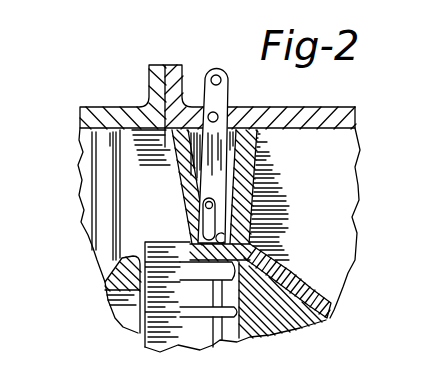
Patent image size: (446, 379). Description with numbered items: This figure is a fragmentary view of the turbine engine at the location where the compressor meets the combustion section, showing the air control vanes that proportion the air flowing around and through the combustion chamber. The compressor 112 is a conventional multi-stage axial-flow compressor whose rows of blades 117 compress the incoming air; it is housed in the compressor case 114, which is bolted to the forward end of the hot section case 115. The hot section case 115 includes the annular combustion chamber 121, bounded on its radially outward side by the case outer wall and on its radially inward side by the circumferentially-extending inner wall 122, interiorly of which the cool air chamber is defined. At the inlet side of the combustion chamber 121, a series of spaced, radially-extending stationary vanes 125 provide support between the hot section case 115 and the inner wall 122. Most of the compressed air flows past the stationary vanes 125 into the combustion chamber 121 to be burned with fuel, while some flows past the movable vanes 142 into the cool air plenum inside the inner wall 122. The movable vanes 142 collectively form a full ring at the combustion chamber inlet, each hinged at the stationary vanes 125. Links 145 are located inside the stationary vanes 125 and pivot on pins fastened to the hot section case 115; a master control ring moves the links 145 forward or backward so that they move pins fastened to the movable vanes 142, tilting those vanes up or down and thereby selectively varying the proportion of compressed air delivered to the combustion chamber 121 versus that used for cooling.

The compressor case 114 is at (123, 109).
The hot section case 115 is at (300, 107).
The links 145 is at (218, 90).
The stationary vanes 125 is at (183, 188).
The combustion chamber 121 is at (331, 197).
The inner wall 122 is at (337, 310).
The blades 117 is at (110, 212).
The compressor 112 is at (108, 279).
The movable vanes 142 is at (143, 335).